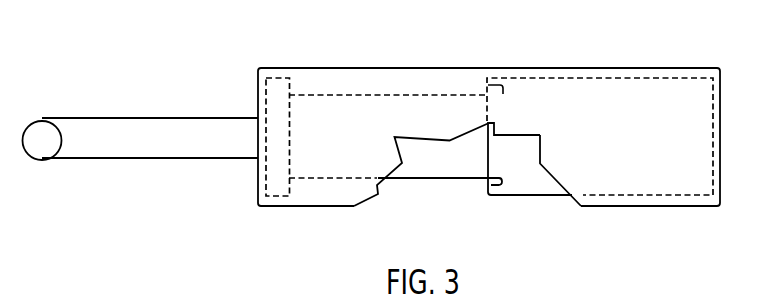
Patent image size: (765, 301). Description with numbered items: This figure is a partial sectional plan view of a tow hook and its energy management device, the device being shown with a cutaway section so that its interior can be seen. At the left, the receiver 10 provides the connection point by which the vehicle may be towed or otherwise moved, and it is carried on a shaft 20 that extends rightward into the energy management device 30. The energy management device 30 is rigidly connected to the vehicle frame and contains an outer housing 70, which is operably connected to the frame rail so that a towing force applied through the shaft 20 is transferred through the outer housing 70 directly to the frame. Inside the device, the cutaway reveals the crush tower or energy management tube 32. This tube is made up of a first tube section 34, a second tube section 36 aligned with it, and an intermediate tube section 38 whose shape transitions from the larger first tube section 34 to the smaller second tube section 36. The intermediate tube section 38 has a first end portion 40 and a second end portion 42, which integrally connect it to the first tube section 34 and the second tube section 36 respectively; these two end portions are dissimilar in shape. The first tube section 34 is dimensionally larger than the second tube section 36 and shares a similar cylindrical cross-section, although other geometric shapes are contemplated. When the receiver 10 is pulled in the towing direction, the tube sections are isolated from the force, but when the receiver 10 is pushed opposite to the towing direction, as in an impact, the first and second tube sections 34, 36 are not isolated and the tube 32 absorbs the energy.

The receiver 10 is at (24, 152).
The shaft 20 is at (77, 152).
The energy management device 30 is at (653, 208).
The energy management tube 32 is at (494, 210).
The first tube section 34 is at (532, 189).
The second tube section 36 is at (394, 173).
The intermediate tube section 38 is at (504, 152).
The first end portion 40 is at (479, 70).
The second end portion 42 is at (496, 83).
The outer housing 70 is at (296, 199).